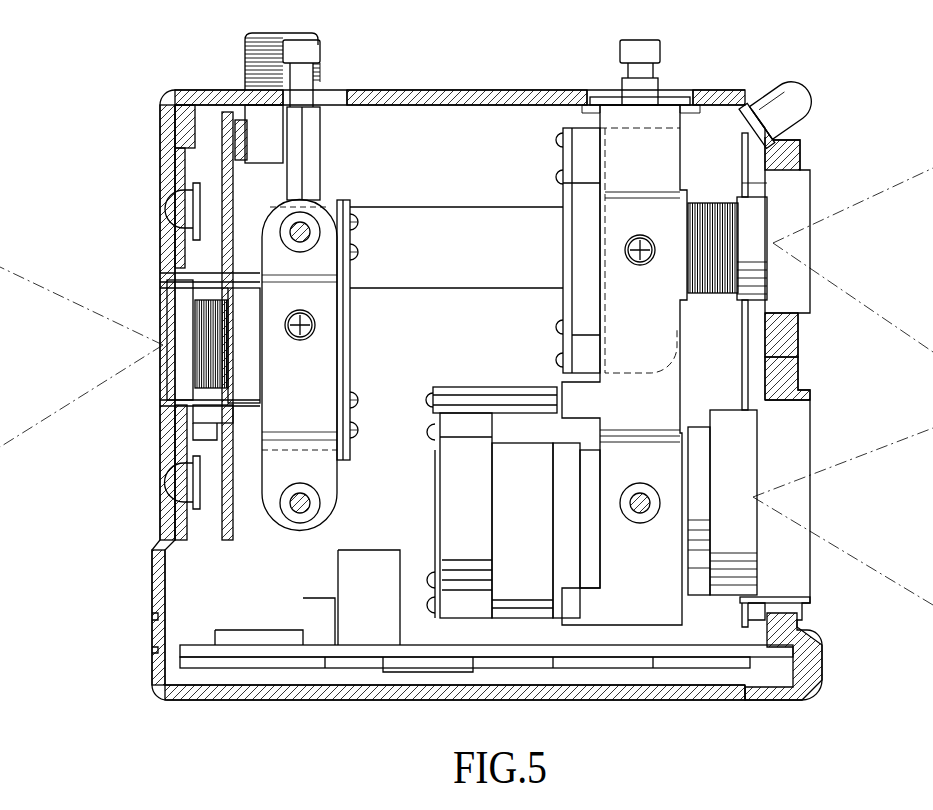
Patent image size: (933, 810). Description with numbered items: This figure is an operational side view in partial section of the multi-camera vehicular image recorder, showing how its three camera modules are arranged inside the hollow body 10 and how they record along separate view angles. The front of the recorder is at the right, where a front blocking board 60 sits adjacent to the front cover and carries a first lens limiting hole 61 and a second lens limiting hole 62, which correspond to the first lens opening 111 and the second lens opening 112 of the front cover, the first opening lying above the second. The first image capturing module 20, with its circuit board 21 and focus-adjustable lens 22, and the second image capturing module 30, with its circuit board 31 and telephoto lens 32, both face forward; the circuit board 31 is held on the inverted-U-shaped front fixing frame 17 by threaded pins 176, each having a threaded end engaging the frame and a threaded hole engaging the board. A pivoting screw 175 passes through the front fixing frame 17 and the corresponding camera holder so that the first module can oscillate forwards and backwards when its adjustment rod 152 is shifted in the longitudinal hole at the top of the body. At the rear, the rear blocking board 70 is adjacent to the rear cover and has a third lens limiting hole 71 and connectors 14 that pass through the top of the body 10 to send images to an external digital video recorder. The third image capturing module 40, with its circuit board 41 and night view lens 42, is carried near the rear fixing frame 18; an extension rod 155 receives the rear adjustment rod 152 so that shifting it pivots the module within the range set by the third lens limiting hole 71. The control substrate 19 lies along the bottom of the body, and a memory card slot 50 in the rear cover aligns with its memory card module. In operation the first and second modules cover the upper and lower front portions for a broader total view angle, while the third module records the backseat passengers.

The body 10 is at (473, 95).
The connector 14 is at (255, 52).
The adjustment rod 152 is at (310, 53).
The extension rod 155 is at (314, 188).
The rear fixing frame 18 is at (310, 392).
The pivoting screw 175 is at (317, 325).
The circuit board 41 is at (353, 270).
The rear blocking board 70 is at (228, 138).
The lens 42 is at (173, 300).
The third image capturing module 40 is at (213, 380).
The third lens limiting hole 71 is at (235, 425).
The memory card slot 50 is at (163, 620).
The control substrate 19 is at (183, 650).
The circuit board 31 is at (435, 497).
The threaded pin 176 is at (525, 392).
The circuit board 21 is at (570, 243).
The front fixing frame 17 is at (660, 397).
The first image capturing module 20 is at (688, 197).
The lens 22 is at (757, 218).
The front blocking board 60 is at (743, 152).
The first lens limiting hole 61 is at (743, 310).
The second lens limiting hole 62 is at (748, 413).
The first lens opening 111 is at (798, 313).
The second lens opening 112 is at (803, 403).
The lens 32 is at (745, 553).
The second image capturing module 30 is at (695, 570).